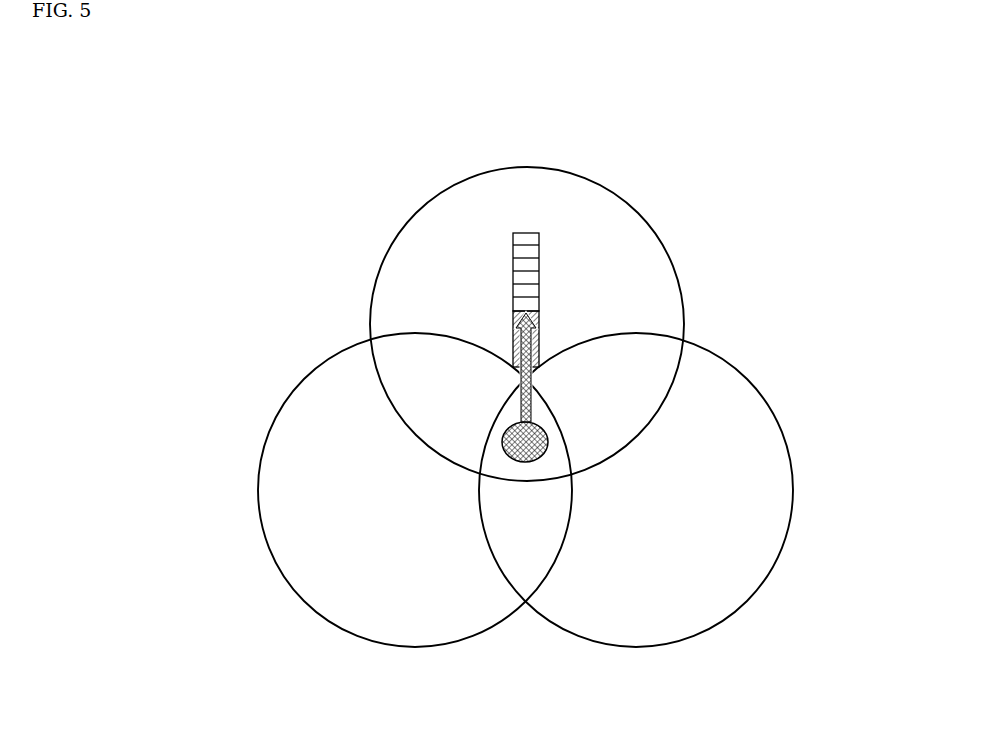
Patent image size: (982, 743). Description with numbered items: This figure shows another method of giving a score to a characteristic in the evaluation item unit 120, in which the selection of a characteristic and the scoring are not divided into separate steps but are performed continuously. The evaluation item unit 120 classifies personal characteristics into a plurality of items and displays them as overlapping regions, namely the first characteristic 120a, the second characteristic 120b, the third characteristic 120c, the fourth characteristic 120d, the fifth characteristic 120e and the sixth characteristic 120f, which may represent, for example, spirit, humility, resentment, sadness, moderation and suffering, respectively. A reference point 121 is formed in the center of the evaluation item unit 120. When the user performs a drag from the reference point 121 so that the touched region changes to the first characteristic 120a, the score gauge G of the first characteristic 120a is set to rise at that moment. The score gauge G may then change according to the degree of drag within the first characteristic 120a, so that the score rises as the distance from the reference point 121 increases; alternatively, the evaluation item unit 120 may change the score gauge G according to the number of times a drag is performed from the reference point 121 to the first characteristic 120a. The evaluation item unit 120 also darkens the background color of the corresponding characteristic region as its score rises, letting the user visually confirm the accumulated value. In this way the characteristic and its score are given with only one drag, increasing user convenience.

The evaluation item unit 120 is at (160, 121).
The first characteristic 120a is at (424, 230).
The second characteristic 120b is at (272, 490).
The third characteristic 120c is at (730, 568).
The fourth characteristic 120d is at (383, 349).
The fifth characteristic 120e is at (522, 580).
The sixth characteristic 120f is at (658, 360).
The score gauge G is at (524, 232).
The reference point 121 is at (548, 439).